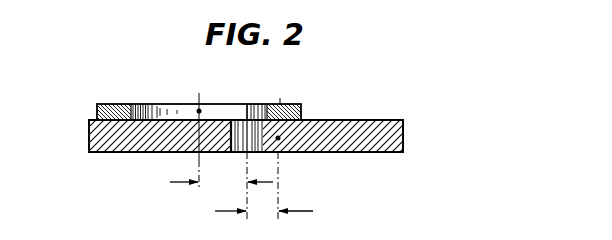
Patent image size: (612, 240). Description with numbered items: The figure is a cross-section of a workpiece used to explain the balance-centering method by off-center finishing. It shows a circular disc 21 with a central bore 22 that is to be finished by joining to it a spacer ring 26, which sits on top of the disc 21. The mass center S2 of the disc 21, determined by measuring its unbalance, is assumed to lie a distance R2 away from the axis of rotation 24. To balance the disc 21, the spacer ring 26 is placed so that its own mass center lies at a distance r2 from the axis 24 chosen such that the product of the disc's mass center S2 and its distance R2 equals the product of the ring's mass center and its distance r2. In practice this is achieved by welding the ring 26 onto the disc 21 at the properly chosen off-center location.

The circular disc 21 is at (89, 134).
The central bore 22 is at (248, 151).
The axis of rotation 24 is at (249, 103).
The spacer ring 26 is at (97, 112).
The mass center of the disc S2 is at (199, 111).
The distance of ring mass center from axis r2 is at (221, 186).
The distance of disc mass center from axis R2 is at (264, 189).